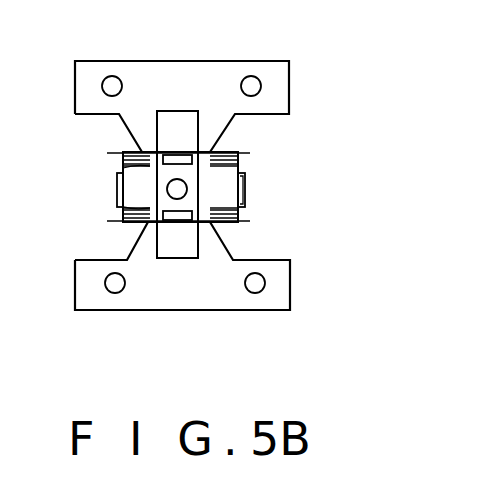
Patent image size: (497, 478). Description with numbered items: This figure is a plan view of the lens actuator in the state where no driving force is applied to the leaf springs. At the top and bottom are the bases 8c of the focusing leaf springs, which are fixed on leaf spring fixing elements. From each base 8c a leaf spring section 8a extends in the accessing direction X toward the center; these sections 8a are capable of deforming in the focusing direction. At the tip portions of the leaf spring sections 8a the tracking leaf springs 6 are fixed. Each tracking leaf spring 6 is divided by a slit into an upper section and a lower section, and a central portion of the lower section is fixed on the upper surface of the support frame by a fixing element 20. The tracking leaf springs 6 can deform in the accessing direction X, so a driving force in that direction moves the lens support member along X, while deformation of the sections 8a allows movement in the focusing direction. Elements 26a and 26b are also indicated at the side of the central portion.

The base 8c is at (278, 72).
The leaf spring section 8a is at (128, 130).
The tracking leaf spring 6 is at (238, 144).
The fixing element 20 is at (135, 158).
The right tab outer 26a is at (241, 179).
The right tab inner 26b is at (245, 187).
The accessing direction X is at (17, 127).